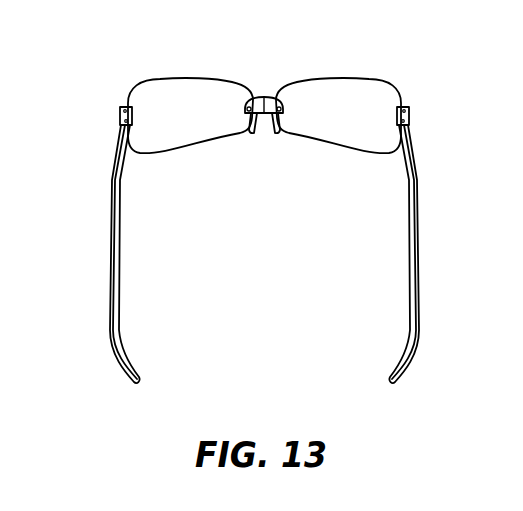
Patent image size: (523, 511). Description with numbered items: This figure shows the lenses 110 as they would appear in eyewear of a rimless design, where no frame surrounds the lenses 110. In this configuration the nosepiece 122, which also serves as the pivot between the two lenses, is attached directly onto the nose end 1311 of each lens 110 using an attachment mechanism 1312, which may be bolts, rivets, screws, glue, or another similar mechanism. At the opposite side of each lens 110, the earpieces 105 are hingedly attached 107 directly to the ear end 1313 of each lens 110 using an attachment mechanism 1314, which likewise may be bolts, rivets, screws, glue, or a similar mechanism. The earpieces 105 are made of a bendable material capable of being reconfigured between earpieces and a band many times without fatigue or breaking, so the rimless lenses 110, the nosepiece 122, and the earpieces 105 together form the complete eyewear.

The earpieces 105 is at (117, 325).
The hinged attachment 107 is at (120, 114).
The lenses 110 is at (263, 147).
The nosepiece 122 is at (279, 97).
The nose end 1311 is at (257, 133).
The attachment mechanism 1312 is at (246, 108).
The ear end 1313 is at (153, 150).
The attachment mechanism 1314 is at (127, 104).